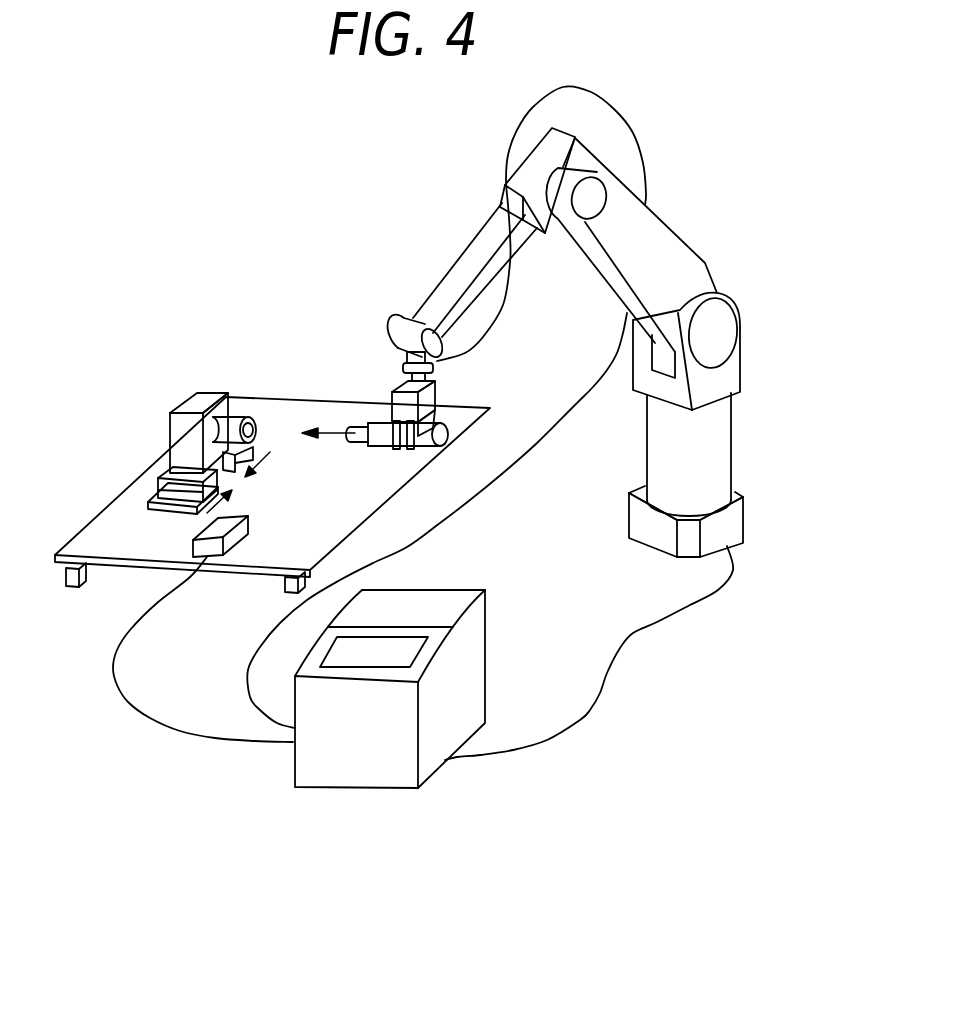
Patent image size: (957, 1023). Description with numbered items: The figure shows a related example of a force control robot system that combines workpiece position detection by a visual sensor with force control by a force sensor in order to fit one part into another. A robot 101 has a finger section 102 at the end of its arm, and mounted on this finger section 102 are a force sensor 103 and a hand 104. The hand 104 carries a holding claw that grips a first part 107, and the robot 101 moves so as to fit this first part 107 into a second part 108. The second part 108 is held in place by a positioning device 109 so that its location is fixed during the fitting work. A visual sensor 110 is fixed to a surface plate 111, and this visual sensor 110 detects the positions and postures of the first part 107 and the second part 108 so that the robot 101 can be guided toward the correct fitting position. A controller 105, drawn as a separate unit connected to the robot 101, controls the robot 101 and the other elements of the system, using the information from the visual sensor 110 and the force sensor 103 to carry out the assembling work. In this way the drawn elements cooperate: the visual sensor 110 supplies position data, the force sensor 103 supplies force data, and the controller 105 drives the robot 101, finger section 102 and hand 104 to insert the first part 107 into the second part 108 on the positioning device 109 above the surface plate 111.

The robot 101 is at (668, 202).
The finger section 102 is at (403, 314).
The force sensor 103 is at (407, 365).
The hand 104 is at (393, 410).
The controller 105 is at (432, 767).
The first part 107 is at (377, 441).
The second part 108 is at (207, 393).
The positioning device 109 is at (155, 495).
The visual sensor 110 is at (235, 538).
The surface plate 111 is at (150, 475).